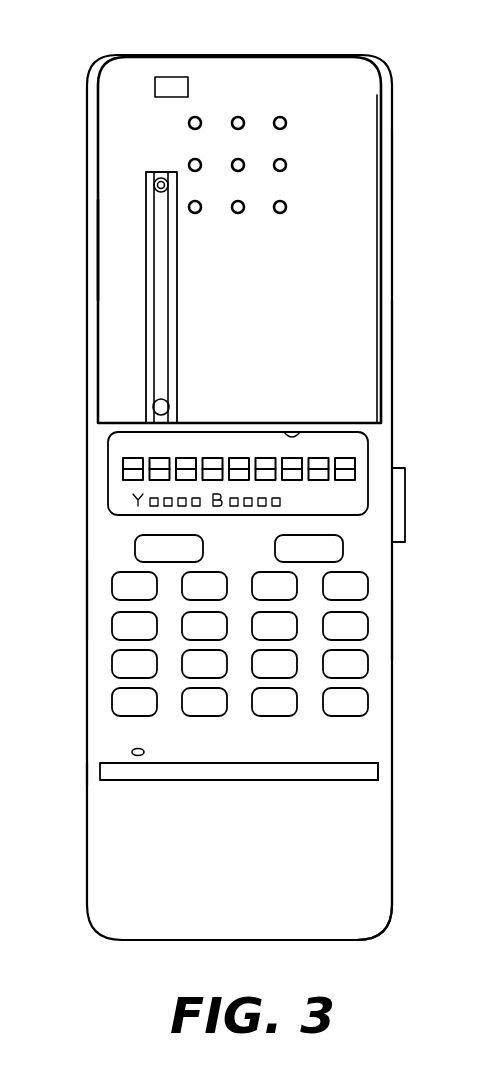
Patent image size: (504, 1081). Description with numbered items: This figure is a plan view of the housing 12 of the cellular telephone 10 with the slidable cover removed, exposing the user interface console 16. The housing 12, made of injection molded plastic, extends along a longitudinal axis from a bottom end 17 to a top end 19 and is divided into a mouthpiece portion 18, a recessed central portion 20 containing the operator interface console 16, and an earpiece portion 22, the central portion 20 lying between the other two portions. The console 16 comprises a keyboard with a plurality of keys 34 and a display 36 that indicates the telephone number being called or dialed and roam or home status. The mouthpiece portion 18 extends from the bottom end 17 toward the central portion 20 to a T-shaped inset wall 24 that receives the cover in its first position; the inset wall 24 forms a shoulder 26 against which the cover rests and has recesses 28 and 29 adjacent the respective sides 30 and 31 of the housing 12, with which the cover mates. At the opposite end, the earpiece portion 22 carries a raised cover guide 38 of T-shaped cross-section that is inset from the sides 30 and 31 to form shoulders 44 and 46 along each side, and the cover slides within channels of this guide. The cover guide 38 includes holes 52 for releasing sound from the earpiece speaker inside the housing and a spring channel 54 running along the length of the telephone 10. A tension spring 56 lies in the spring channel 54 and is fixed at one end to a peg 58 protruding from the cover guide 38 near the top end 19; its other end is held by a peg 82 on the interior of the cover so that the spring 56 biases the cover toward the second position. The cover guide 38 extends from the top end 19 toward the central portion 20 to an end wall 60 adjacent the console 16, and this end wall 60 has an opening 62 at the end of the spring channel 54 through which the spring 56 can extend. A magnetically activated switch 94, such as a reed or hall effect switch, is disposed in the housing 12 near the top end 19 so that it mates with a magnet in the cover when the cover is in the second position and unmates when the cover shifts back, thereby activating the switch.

The cellular telephone 10 is at (436, 258).
The housing 12 is at (397, 688).
The user interface console 16 is at (370, 550).
The bottom end 17 is at (288, 942).
The mouthpiece portion 18 is at (372, 875).
The top end 19 is at (218, 54).
The recessed central portion 20 is at (392, 628).
The earpiece portion 22 is at (392, 163).
The inset wall 24 is at (218, 763).
The shoulder 26 is at (88, 770).
The recess 28 is at (378, 765).
The recess 29 is at (97, 775).
The side 30 is at (395, 446).
The side 31 is at (88, 595).
The keys 34 is at (112, 660).
The display 36 is at (122, 472).
The cover guide 38 is at (347, 90).
The shoulder 44 is at (392, 330).
The shoulder 46 is at (88, 255).
The holes 52 is at (240, 214).
The spring channel 54 is at (177, 272).
The tension spring 56 is at (162, 312).
The peg 58 is at (160, 180).
The end wall 60 is at (293, 435).
The opening 62 is at (200, 423).
The peg 82 is at (152, 407).
The magnetically activated switch 94 is at (190, 87).